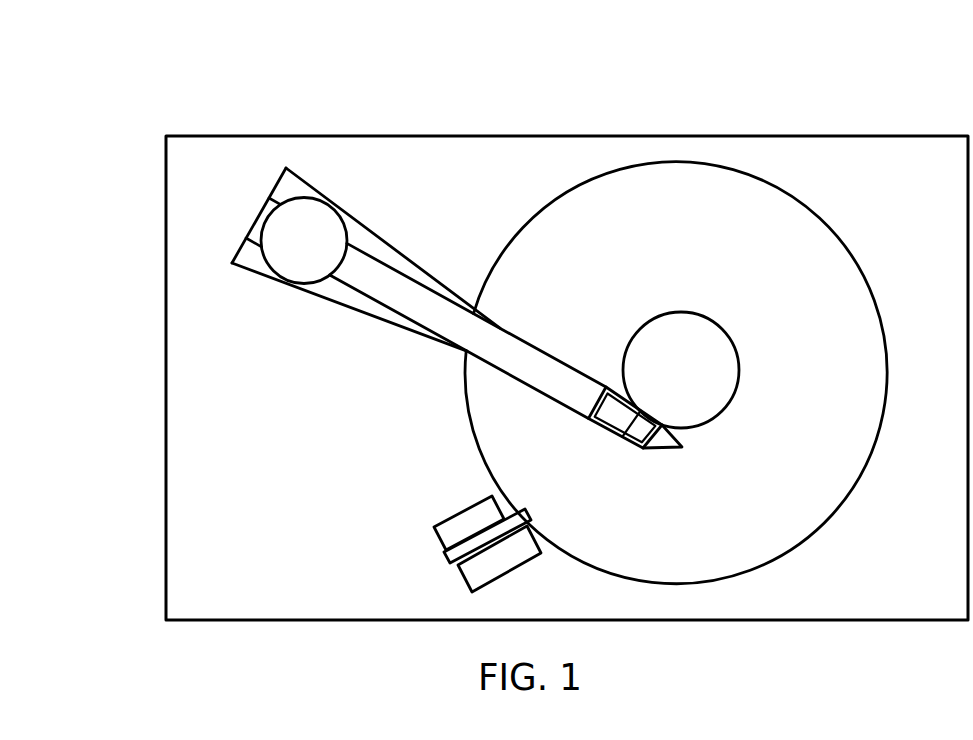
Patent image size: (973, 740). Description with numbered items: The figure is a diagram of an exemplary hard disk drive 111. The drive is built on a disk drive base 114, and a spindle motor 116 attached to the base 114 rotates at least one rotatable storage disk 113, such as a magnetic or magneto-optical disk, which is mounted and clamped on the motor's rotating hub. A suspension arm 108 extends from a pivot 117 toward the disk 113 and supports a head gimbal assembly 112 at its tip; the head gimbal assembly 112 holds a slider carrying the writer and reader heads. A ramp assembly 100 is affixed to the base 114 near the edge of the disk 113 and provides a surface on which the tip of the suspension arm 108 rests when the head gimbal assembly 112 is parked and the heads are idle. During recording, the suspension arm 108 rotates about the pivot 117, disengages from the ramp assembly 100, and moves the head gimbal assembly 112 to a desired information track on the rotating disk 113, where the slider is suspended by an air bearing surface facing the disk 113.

The ramp assembly 100 is at (444, 557).
The suspension arm 108 is at (425, 335).
The hard disk drive 111 is at (400, 136).
The head gimbal assembly 112 is at (612, 433).
The rotatable storage disk 113 is at (512, 240).
The disk drive base 114 is at (187, 511).
The spindle motor 116 is at (681, 318).
The pivot 117 is at (294, 270).